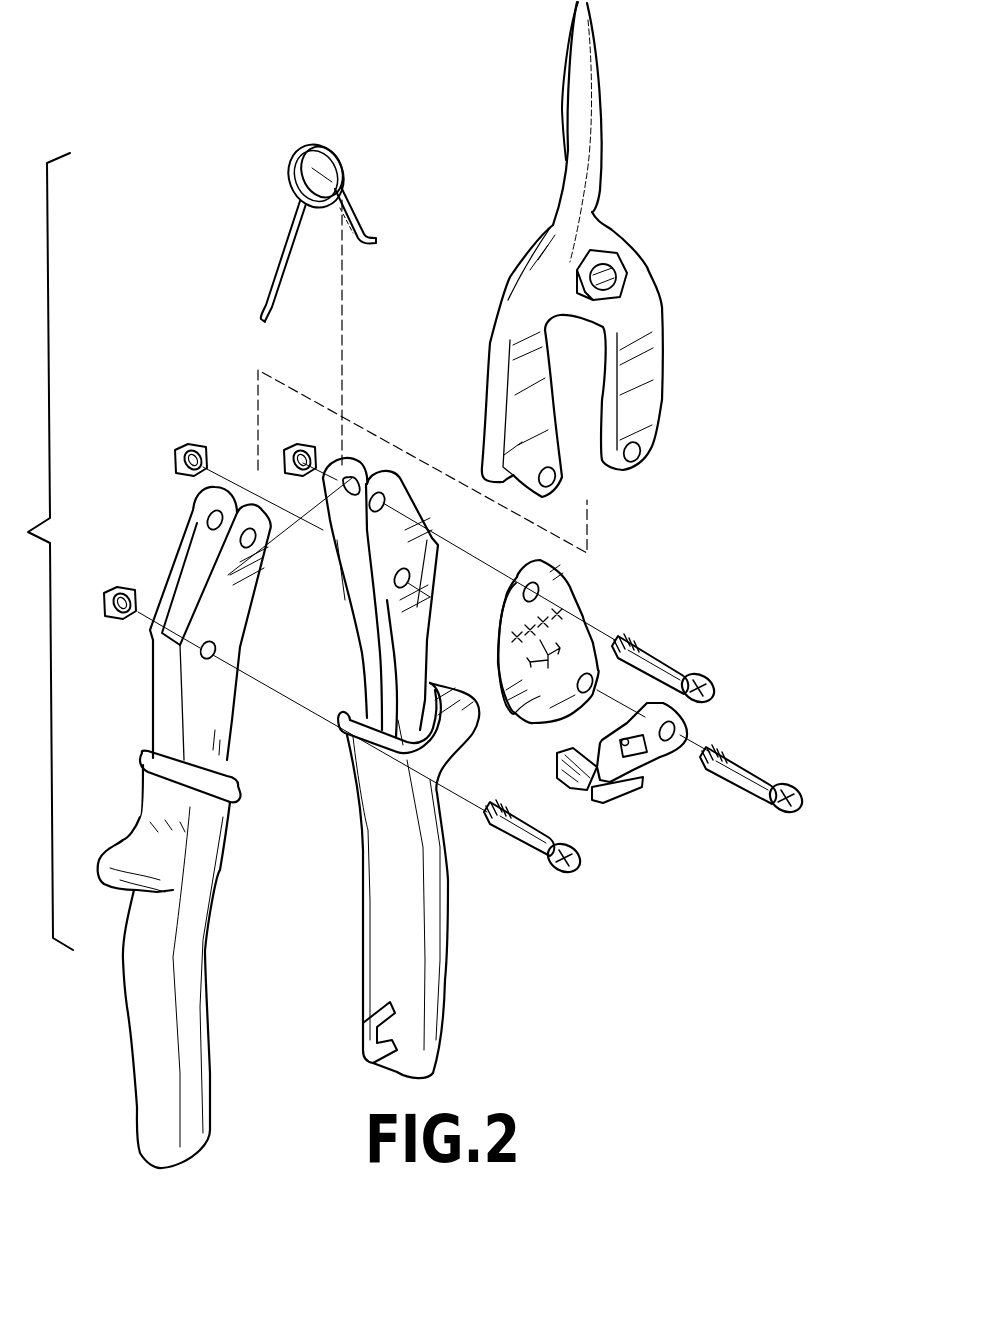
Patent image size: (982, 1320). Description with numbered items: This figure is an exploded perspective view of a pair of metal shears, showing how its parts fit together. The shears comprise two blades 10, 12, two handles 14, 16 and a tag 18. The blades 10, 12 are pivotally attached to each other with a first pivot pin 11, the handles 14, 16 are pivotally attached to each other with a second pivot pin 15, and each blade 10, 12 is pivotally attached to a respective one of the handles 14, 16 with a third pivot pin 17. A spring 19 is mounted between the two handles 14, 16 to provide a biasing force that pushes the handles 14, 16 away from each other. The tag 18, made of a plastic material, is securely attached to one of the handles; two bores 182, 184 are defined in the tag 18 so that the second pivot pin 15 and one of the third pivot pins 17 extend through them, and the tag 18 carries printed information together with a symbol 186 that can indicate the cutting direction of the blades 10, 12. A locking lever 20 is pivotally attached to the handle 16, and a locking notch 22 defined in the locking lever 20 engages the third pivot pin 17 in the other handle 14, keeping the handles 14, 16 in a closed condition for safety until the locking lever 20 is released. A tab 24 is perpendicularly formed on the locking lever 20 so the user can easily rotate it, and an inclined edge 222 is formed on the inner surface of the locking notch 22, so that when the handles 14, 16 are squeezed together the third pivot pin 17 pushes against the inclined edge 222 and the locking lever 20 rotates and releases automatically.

The blade 10 is at (584, 88).
The first pivot pin 11 is at (618, 268).
The blade 12 is at (520, 288).
The handle 14 is at (155, 678).
The second pivot pin 15 is at (650, 657).
The handle 16 is at (423, 617).
The third pivot pin 17 is at (523, 840).
The tag 18 is at (539, 645).
The bore 182 is at (528, 588).
The bore 184 is at (537, 712).
The symbol 186 is at (504, 655).
The spring 19 is at (306, 162).
The locking lever 20 is at (603, 775).
The locking notch 22 is at (593, 787).
The inclined edge 222 is at (573, 748).
The tab 24 is at (623, 790).